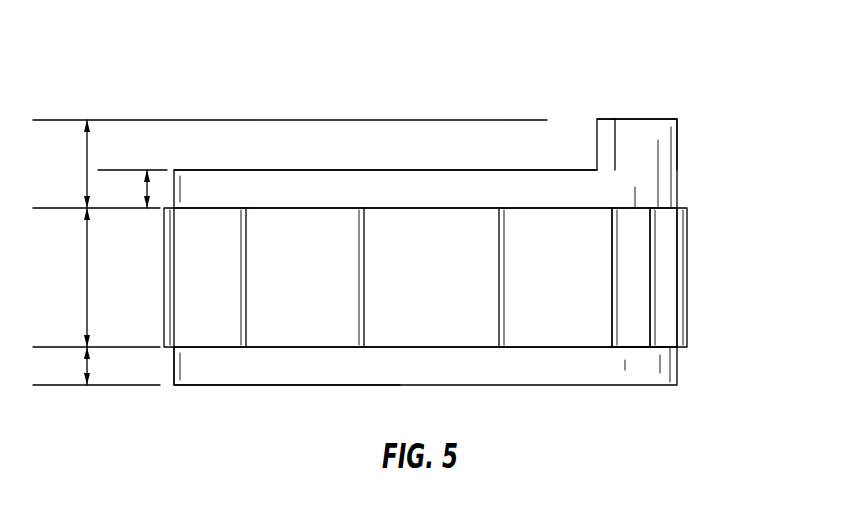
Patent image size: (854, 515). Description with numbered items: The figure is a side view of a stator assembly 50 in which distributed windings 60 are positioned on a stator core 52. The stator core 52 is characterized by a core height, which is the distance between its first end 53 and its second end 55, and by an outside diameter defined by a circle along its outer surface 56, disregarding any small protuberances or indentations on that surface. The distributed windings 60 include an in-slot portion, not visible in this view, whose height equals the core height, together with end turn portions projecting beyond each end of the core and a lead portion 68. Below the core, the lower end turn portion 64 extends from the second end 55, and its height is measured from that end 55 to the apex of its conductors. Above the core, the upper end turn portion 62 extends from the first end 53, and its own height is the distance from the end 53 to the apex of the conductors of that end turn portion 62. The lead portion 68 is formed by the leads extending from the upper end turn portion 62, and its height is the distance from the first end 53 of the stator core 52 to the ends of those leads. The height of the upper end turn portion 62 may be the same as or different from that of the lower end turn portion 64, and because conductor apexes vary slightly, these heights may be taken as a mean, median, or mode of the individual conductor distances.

The stator assembly 50 is at (706, 69).
The stator core 52 is at (688, 297).
The first end 53 is at (653, 207).
The second end 55 is at (637, 347).
The outer surface 56 is at (640, 262).
The distributed windings 60 is at (557, 386).
The upper end turn portion 62 is at (305, 187).
The lower end turn portion 64 is at (231, 366).
The lead portion 68 is at (630, 118).